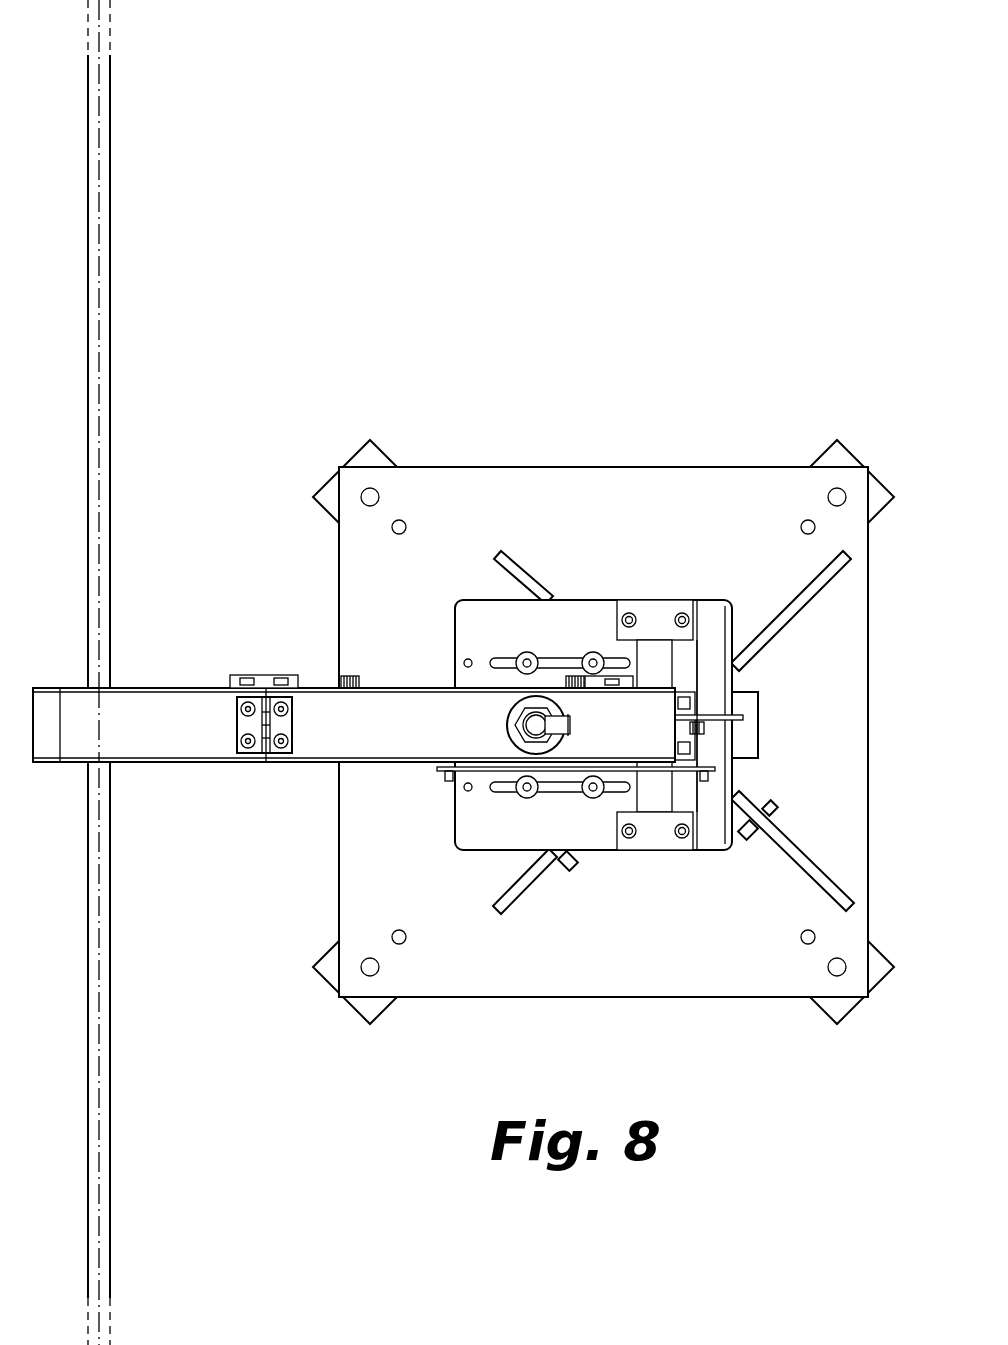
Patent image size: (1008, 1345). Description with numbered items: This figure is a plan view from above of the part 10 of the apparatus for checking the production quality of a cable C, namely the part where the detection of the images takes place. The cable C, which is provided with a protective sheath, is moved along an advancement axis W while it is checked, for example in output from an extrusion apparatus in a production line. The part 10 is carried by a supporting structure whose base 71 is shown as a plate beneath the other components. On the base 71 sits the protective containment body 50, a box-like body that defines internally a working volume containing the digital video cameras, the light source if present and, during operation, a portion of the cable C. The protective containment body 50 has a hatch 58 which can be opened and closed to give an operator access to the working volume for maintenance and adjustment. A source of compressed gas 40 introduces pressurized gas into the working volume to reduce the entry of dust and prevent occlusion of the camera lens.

The part of the apparatus 10 is at (787, 306).
The base 71 is at (680, 515).
The source of compressed gas 40 is at (538, 722).
The protective containment body 50 is at (374, 708).
The hatch 58 is at (180, 730).
The advancement axis W is at (100, 143).
The cable C is at (120, 244).